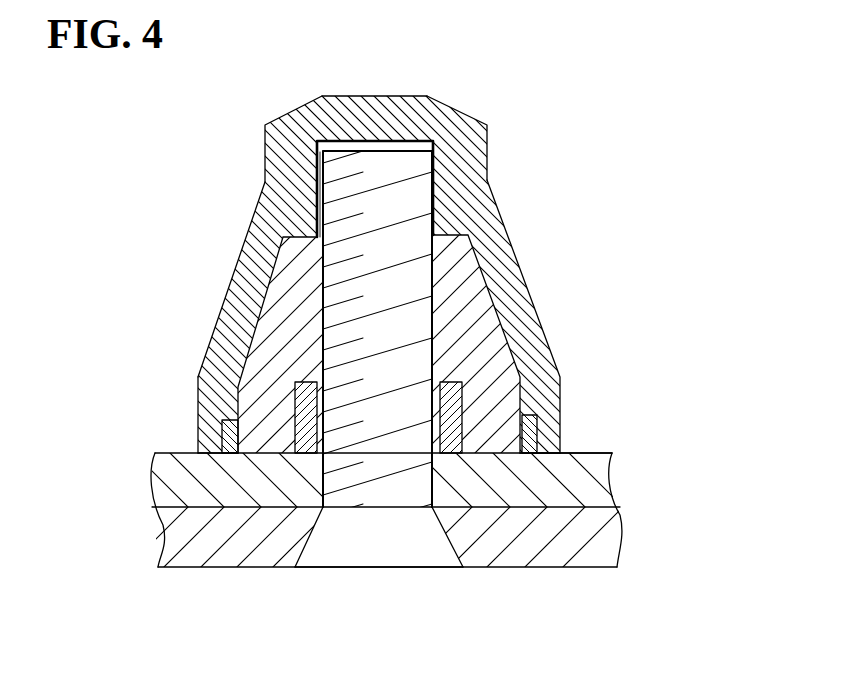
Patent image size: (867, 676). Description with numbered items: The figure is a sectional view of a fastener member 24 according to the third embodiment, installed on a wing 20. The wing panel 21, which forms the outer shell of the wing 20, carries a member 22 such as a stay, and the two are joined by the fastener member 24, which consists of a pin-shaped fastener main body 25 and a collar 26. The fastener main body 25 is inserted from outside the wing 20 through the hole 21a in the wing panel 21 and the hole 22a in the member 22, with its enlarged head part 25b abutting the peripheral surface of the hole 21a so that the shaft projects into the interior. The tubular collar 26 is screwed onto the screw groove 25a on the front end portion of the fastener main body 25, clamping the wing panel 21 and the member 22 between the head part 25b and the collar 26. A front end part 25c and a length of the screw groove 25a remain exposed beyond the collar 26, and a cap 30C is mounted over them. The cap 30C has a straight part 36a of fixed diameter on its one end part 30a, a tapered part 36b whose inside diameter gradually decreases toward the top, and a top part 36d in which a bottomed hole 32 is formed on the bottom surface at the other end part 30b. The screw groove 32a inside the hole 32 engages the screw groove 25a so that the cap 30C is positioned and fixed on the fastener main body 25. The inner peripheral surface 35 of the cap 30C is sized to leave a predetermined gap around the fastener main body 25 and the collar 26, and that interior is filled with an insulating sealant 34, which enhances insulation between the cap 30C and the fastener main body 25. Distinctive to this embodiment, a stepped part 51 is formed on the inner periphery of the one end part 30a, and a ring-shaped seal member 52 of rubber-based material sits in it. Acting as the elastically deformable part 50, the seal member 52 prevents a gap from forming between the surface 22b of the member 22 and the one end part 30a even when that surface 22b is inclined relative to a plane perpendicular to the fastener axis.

The wing 20 is at (691, 460).
The wing panel 21 is at (612, 540).
The hole 21a is at (445, 561).
The member 22 is at (602, 493).
The hole 22a is at (433, 504).
The surface 22b is at (610, 453).
The fastener member 24 is at (529, 233).
The fastener main body 25 is at (324, 300).
The screw groove 25a is at (290, 353).
The head part 25b is at (297, 557).
The front end part 25c is at (388, 151).
The collar 26 is at (230, 424).
The one end part 30a is at (561, 380).
The other end part 30b is at (360, 96).
The cap 30C is at (487, 145).
The bottomed hole 32 is at (430, 140).
The screw groove 32a is at (327, 151).
The sealant 34 is at (277, 268).
The inner peripheral surface 35 is at (476, 292).
The straight part 36a is at (198, 412).
The tapered part 36b is at (239, 259).
The top part 36d is at (264, 160).
The elastically deformable part 50 is at (378, 417).
The stepped part 51 is at (549, 430).
The seal member 52 is at (523, 433).